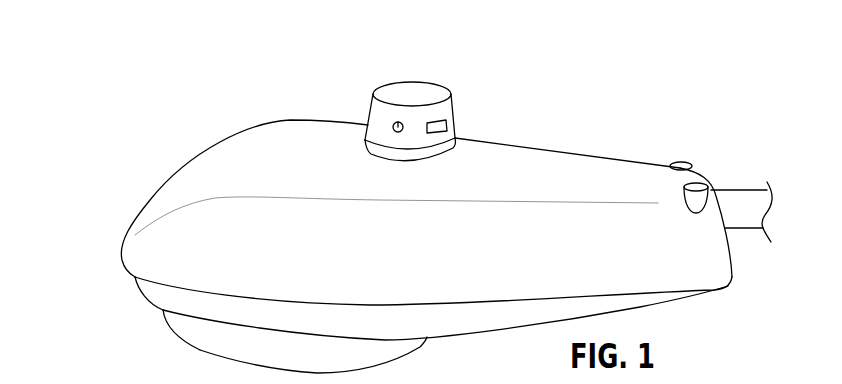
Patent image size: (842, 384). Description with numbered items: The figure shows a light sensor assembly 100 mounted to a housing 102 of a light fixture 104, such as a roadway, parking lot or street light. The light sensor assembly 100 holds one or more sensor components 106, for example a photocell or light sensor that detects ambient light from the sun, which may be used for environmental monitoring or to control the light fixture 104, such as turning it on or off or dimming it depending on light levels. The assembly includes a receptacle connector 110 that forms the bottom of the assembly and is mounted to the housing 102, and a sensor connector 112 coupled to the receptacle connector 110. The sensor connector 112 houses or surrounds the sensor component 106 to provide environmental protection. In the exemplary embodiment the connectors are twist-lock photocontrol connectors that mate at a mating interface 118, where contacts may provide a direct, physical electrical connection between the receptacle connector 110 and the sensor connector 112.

The light sensor assembly 100 is at (376, 46).
The housing 102 is at (590, 197).
The light fixture 104 is at (550, 143).
The sensor component 106 is at (395, 122).
The receptacle connector 110 is at (363, 138).
The sensor connector 112 is at (383, 113).
The mating interface 118 is at (464, 130).